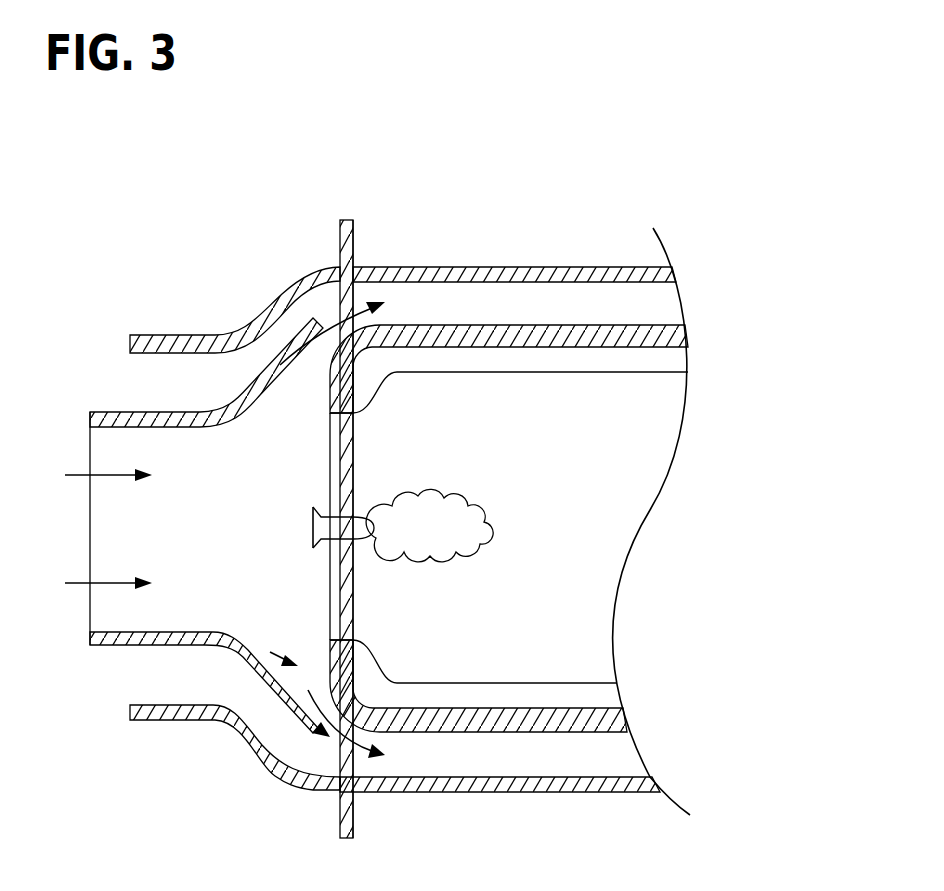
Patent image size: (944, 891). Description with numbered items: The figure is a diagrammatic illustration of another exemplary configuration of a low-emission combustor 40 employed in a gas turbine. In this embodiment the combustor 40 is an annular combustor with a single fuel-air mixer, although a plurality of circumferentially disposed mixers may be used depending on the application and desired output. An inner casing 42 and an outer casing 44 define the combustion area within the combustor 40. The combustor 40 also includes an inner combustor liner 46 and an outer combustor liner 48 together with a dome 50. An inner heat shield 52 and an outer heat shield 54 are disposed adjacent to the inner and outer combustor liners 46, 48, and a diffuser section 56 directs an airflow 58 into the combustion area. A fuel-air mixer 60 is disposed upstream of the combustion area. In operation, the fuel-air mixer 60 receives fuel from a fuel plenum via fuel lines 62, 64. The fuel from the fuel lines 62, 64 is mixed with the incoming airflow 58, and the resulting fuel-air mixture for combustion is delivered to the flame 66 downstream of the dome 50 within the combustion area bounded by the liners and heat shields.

The low-emission combustor 40 is at (255, 182).
The inner casing 42 is at (263, 757).
The outer casing 44 is at (171, 347).
The inner combustor liner 46 is at (620, 720).
The outer combustor liner 48 is at (682, 338).
The dome 50 is at (355, 575).
The inner heat shield 52 is at (544, 683).
The outer heat shield 54 is at (600, 370).
The diffuser section 56 is at (100, 648).
The airflow 58 is at (77, 473).
The fuel-air mixer 60 is at (362, 514).
The fuel line 62 is at (353, 233).
The fuel line 64 is at (346, 529).
The flame 66 is at (485, 527).